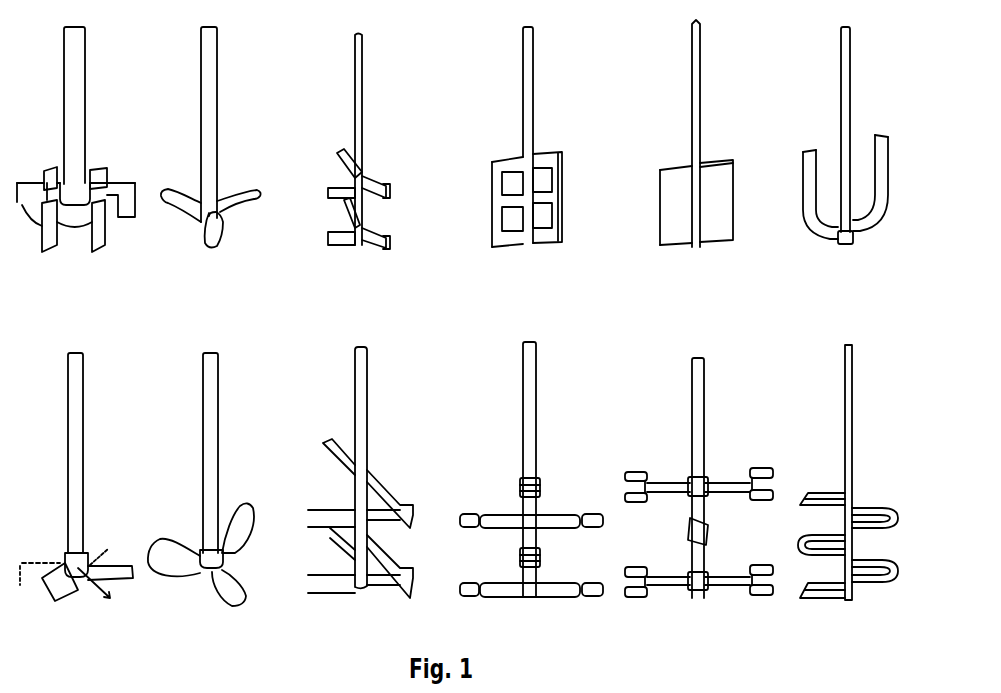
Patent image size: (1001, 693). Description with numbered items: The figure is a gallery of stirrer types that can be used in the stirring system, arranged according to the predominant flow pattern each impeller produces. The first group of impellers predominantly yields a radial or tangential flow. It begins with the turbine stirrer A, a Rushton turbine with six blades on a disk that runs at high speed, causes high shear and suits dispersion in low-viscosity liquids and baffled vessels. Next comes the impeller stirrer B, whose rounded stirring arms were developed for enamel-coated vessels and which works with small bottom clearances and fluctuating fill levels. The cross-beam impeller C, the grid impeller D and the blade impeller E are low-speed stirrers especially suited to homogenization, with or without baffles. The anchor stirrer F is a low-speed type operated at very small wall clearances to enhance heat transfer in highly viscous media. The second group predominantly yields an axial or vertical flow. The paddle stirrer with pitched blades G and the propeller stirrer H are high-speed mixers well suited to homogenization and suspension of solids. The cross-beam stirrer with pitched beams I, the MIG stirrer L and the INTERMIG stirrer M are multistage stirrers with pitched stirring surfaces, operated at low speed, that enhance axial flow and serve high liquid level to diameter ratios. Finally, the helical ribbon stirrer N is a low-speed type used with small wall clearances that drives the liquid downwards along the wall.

The turbine stirrer A is at (76, 162).
The impeller stirrer B is at (211, 162).
The cross-beam impeller C is at (359, 166).
The grid impeller D is at (527, 162).
The blade impeller E is at (696, 159).
The anchor stirrer F is at (845, 162).
The paddle stirrer with pitched blades G is at (76, 505).
The propeller stirrer H is at (201, 505).
The cross-beam stirrer with pitched beams I is at (360, 502).
The MIG stirrer L is at (531, 499).
The INTERMIG stirrer M is at (699, 507).
The helical ribbon stirrer N is at (848, 501).